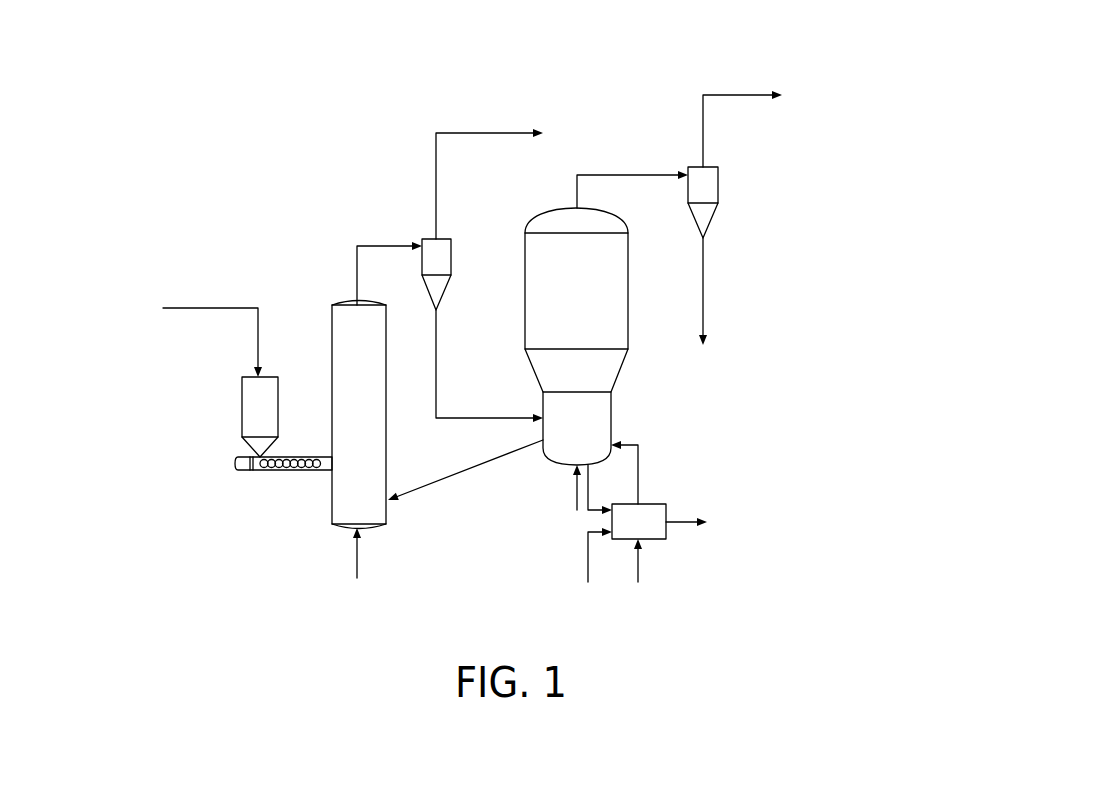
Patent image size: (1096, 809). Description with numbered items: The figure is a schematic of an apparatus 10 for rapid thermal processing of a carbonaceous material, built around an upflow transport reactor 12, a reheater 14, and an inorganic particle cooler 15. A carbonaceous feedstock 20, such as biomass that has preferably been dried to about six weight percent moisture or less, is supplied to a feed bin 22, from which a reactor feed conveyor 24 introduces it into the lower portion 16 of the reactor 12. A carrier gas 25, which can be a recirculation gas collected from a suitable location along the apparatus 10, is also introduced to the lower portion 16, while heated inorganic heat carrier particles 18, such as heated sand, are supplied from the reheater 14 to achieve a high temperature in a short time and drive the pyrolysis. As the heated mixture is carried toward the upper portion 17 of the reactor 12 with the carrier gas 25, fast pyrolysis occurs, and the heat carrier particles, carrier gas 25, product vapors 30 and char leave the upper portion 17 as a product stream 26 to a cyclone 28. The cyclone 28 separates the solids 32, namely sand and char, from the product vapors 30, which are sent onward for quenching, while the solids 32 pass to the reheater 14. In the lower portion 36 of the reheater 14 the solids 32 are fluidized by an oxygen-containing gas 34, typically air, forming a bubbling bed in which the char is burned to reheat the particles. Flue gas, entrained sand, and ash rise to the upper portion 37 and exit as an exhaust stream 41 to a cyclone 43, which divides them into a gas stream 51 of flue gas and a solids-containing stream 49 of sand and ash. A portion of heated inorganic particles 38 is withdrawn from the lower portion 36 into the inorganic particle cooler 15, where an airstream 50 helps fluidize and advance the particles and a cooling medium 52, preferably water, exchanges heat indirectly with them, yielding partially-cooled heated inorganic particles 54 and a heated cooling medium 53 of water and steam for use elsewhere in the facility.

The apparatus 10 is at (238, 46).
The upflow transport reactor 12 is at (359, 415).
The reheater 14 is at (606, 336).
The inorganic particle cooler 15 is at (662, 540).
The lower portion of the reactor 16 is at (332, 485).
The upper portion of the reactor 17 is at (332, 338).
The heated inorganic heat carrier particles 18 is at (463, 472).
The carbonaceous feedstock 20 is at (213, 309).
The feed bin 22 is at (242, 407).
The reactor feed conveyor 24 is at (255, 471).
The carrier gas 25 is at (357, 560).
The product stream 26 is at (357, 272).
The cyclone 28 is at (451, 257).
The product vapors 30 is at (436, 185).
The solids 32 is at (436, 365).
The oxygen-containing gas 34 is at (577, 495).
The lower portion of the reheater 36 is at (611, 422).
The upper portion of the reheater 37 is at (628, 265).
The portion of heated inorganic particles 38 is at (588, 478).
The exhaust stream 41 is at (634, 175).
The cyclone 43 is at (718, 185).
The solids-containing stream 49 is at (703, 293).
The airstream 50 is at (588, 557).
The gas stream 51 is at (745, 95).
The cooling medium 52 is at (636, 572).
The heated cooling medium 53 is at (683, 521).
The partially-cooled heated inorganic particles 54 is at (638, 455).